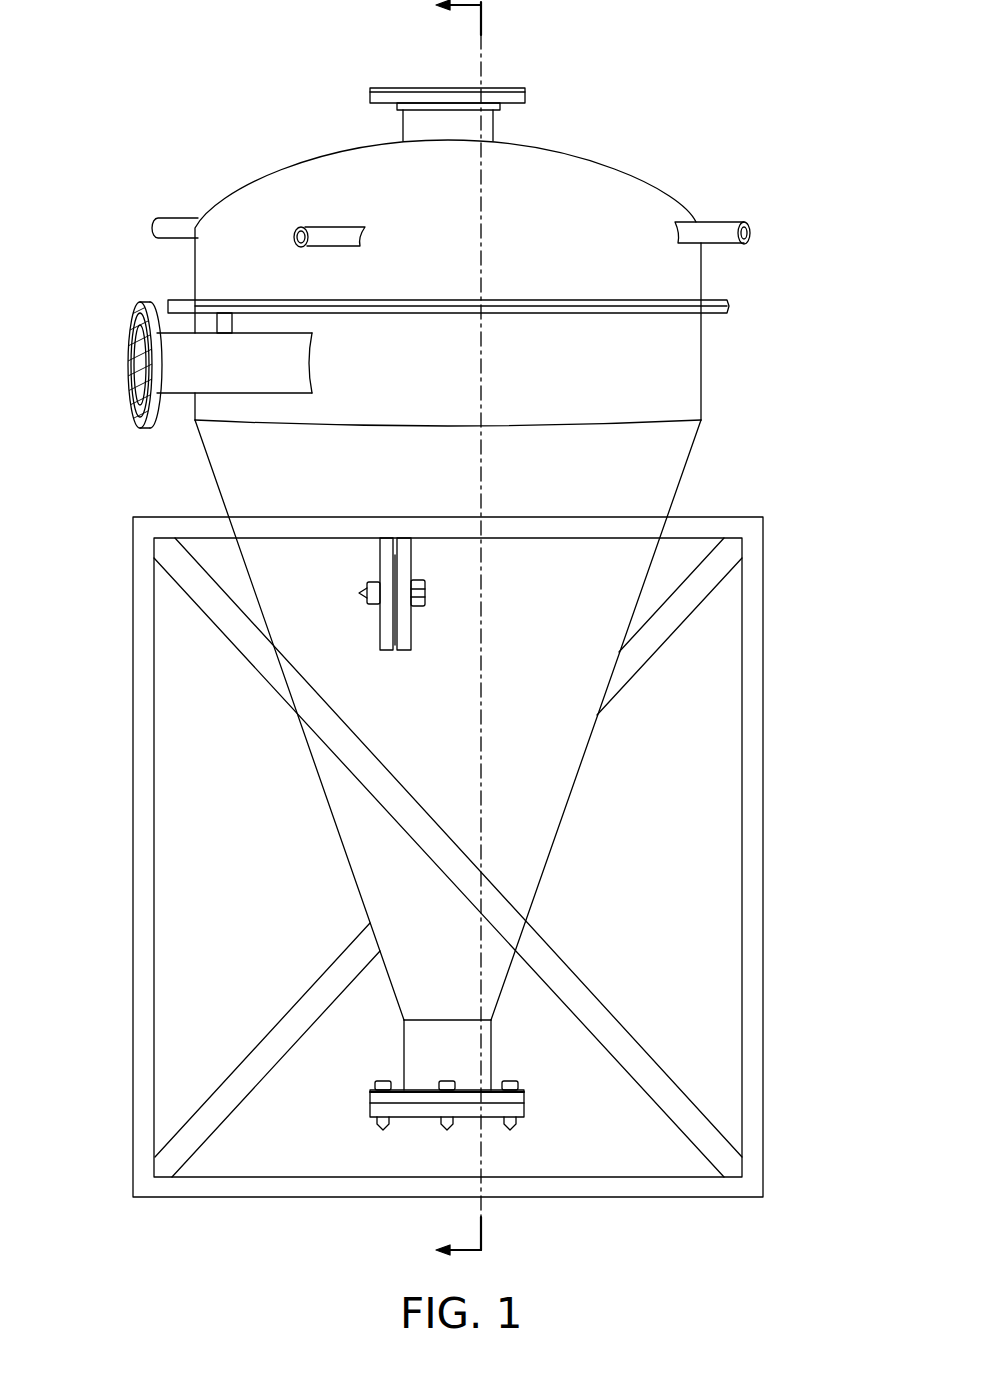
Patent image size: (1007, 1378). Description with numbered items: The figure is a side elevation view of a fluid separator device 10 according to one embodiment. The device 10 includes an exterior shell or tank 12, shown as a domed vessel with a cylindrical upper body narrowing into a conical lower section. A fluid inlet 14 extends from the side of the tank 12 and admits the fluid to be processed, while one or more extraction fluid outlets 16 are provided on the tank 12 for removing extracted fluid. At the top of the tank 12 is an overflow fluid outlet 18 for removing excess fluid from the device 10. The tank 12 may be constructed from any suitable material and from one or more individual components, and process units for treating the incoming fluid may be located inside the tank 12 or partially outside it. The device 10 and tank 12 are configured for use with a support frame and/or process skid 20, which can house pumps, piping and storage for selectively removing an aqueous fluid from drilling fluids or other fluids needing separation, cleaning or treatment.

The fluid separator device 10 is at (448, 636).
The exterior shell or tank 12 is at (203, 455).
The fluid inlet 14 is at (127, 364).
The extraction fluid outlets 16 is at (150, 226).
The overflow fluid outlet 18 is at (443, 88).
The support frame and/or process skid 20 is at (765, 810).